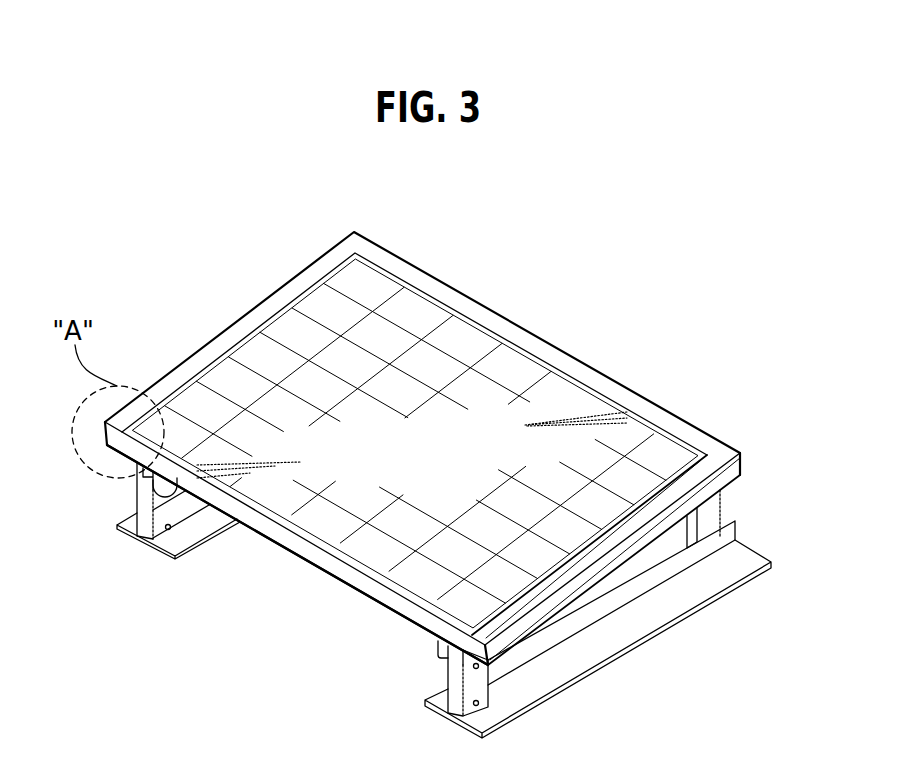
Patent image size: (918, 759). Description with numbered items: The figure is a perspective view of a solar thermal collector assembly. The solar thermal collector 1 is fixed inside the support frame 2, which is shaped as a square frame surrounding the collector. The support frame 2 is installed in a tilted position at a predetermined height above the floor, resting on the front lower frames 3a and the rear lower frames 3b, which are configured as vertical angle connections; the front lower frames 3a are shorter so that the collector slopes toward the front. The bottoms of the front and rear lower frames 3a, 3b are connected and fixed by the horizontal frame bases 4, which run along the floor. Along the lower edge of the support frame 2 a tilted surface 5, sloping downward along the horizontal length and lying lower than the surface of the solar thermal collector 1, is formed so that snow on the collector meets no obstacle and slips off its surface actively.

The solar thermal collector 1 is at (470, 343).
The support frame 2 is at (586, 354).
The front lower frame 3a is at (450, 678).
The rear lower frame 3b is at (713, 512).
The horizontal frame base 4 is at (588, 653).
The tilted surface 5 is at (288, 533).